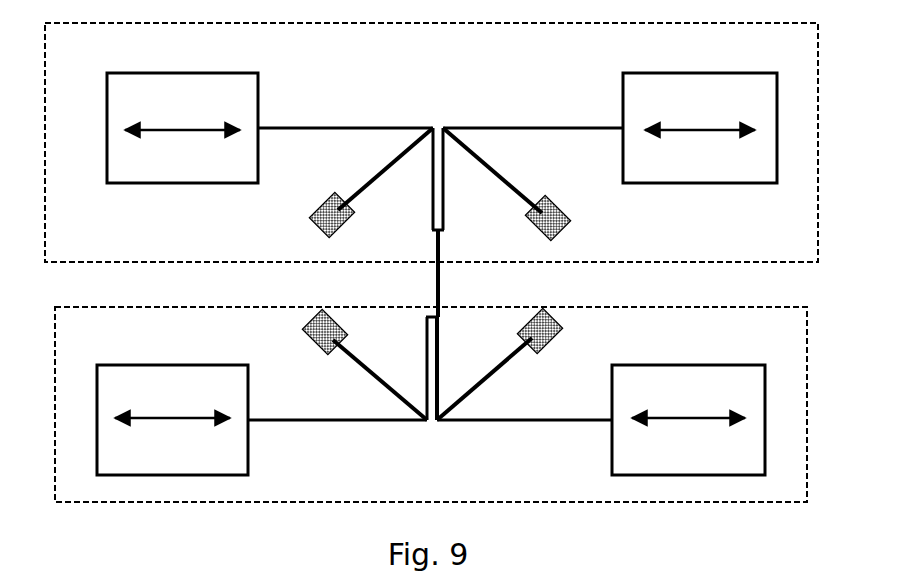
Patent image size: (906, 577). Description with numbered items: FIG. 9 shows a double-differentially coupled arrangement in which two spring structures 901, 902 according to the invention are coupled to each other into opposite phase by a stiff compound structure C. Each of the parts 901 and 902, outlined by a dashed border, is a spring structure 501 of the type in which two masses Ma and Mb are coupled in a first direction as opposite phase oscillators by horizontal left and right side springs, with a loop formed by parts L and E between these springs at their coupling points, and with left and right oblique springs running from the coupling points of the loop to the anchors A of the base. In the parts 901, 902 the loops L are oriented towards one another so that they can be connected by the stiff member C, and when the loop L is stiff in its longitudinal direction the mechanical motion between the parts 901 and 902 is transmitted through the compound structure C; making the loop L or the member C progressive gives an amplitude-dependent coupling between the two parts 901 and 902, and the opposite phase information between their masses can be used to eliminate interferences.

The spring structure 901 is at (431, 170).
The spring structure 902 is at (431, 403).
The spring structure 501 is at (218, 220).